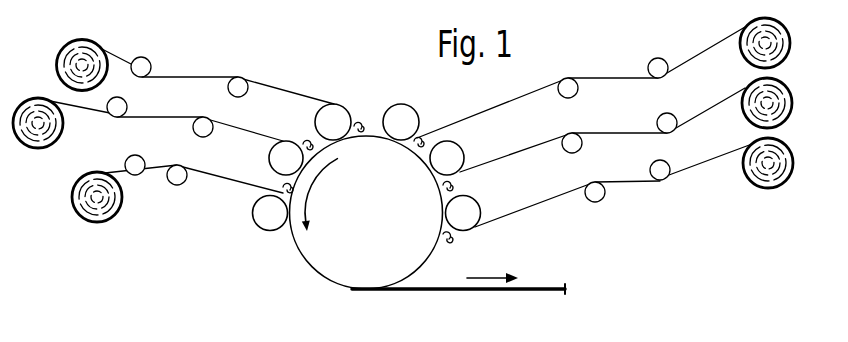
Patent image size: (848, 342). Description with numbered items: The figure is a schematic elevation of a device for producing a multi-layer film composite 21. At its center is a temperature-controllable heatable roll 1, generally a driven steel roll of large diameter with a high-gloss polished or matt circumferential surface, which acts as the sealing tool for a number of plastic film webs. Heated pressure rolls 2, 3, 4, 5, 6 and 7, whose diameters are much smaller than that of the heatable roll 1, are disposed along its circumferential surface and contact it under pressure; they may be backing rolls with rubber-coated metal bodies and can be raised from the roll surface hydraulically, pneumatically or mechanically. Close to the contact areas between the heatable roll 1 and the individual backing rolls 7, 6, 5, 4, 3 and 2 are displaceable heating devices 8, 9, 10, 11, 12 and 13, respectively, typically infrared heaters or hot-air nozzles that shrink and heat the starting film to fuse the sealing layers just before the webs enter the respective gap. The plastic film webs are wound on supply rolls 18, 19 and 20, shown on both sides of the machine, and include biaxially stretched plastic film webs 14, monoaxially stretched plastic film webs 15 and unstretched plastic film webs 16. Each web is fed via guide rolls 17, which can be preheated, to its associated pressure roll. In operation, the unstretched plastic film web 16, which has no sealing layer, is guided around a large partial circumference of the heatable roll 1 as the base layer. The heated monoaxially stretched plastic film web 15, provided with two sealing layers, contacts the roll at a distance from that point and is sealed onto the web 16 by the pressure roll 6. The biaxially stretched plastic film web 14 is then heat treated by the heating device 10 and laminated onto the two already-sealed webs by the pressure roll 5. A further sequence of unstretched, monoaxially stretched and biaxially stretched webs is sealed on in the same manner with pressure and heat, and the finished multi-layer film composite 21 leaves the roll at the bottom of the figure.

The heatable roll 1 is at (320, 265).
The pressure roll 2 is at (260, 224).
The pressure roll 3 is at (272, 157).
The pressure roll 4 is at (320, 120).
The pressure roll 5 is at (396, 108).
The pressure roll 6 is at (458, 150).
The pressure roll 7 is at (472, 215).
The displaceable heating device 8 is at (449, 240).
The displaceable heating device 9 is at (455, 186).
The displaceable heating device 10 is at (421, 136).
The displaceable heating device 11 is at (358, 125).
The displaceable heating device 12 is at (305, 144).
The displaceable heating device 13 is at (286, 188).
The biaxially stretched plastic film web 14 is at (153, 177).
The monoaxially stretched plastic film web 15 is at (178, 116).
The unstretched plastic film web 16 is at (212, 77).
The guide roll 17 is at (183, 166).
The supply roll 18 is at (97, 222).
The supply roll 19 is at (38, 148).
The supply roll 20 is at (70, 47).
The multi-layer film composite 21 is at (437, 292).